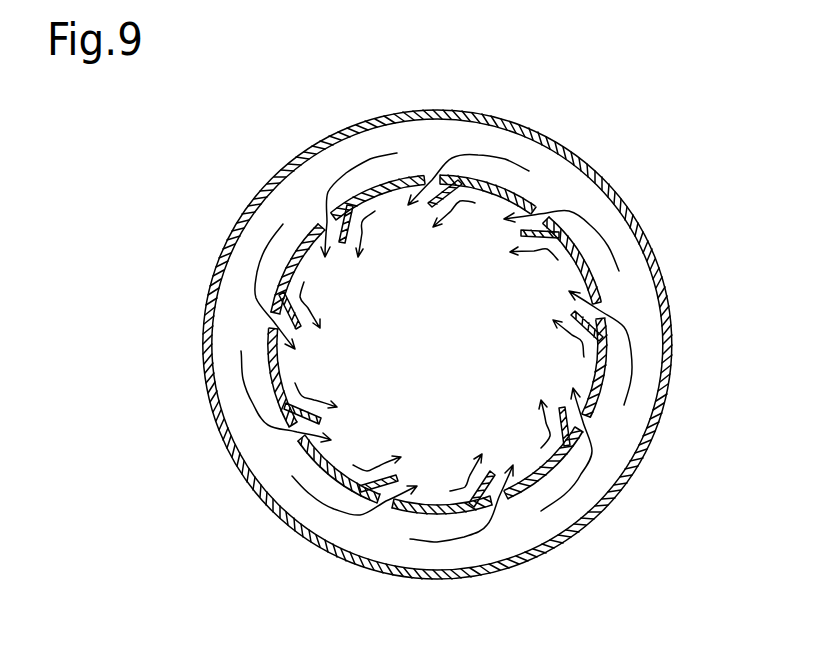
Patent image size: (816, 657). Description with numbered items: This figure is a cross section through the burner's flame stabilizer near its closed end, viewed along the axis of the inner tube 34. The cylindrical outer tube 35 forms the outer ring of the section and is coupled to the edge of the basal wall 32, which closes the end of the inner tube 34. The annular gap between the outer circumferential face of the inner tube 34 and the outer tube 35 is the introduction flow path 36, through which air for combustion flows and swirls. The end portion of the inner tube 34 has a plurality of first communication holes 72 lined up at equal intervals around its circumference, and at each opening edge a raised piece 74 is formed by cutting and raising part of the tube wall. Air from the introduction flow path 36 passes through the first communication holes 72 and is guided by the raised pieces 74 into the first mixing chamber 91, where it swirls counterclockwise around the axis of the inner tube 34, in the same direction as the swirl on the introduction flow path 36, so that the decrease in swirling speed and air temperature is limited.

The basal wall 32 is at (503, 135).
The inner tube 34 is at (597, 290).
The outer tube 35 is at (618, 195).
The introduction flow path 36 is at (578, 508).
The first communication holes 72 is at (506, 496).
The raised pieces 74 is at (561, 407).
The first mixing chamber 91 is at (560, 281).